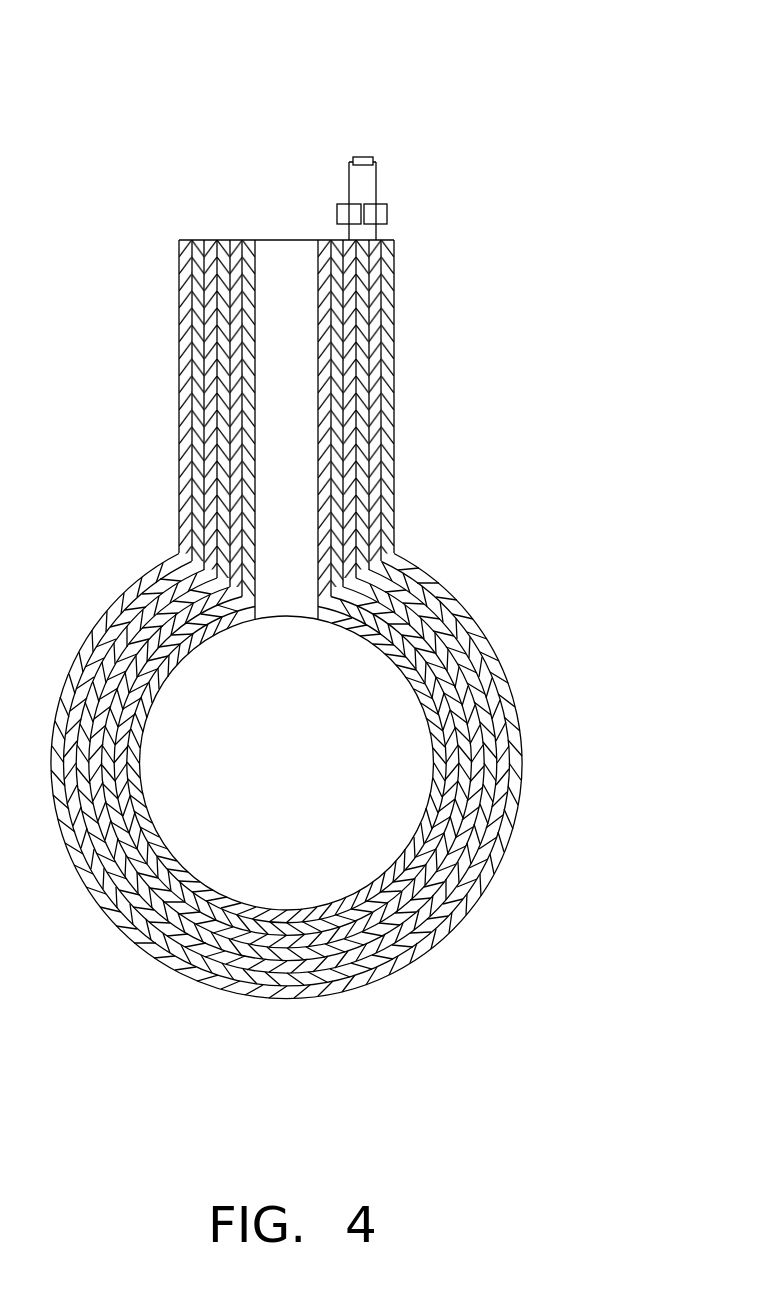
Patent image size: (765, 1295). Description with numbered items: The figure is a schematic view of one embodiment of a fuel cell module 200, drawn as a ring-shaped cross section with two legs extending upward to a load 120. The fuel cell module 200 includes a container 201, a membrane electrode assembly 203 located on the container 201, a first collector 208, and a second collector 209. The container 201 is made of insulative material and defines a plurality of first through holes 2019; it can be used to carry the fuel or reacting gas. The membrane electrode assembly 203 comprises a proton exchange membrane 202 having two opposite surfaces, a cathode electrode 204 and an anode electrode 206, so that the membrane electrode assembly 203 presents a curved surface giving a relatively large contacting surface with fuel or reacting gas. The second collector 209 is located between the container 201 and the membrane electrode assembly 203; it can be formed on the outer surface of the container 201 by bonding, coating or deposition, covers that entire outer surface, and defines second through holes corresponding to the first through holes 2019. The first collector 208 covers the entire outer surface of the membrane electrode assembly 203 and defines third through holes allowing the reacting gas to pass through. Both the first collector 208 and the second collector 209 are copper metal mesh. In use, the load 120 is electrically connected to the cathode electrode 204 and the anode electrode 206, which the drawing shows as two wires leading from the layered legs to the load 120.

The fuel cell module 200 is at (245, 68).
The load 120 is at (363, 157).
The first collector 208 is at (438, 602).
The anode electrode 206 is at (460, 642).
The proton exchange membrane 202 is at (466, 676).
The membrane electrode assembly 203 is at (567, 593).
The cathode electrode 204 is at (470, 718).
The second collector 209 is at (452, 792).
The container 201 is at (433, 816).
The first through holes 2019 is at (422, 840).